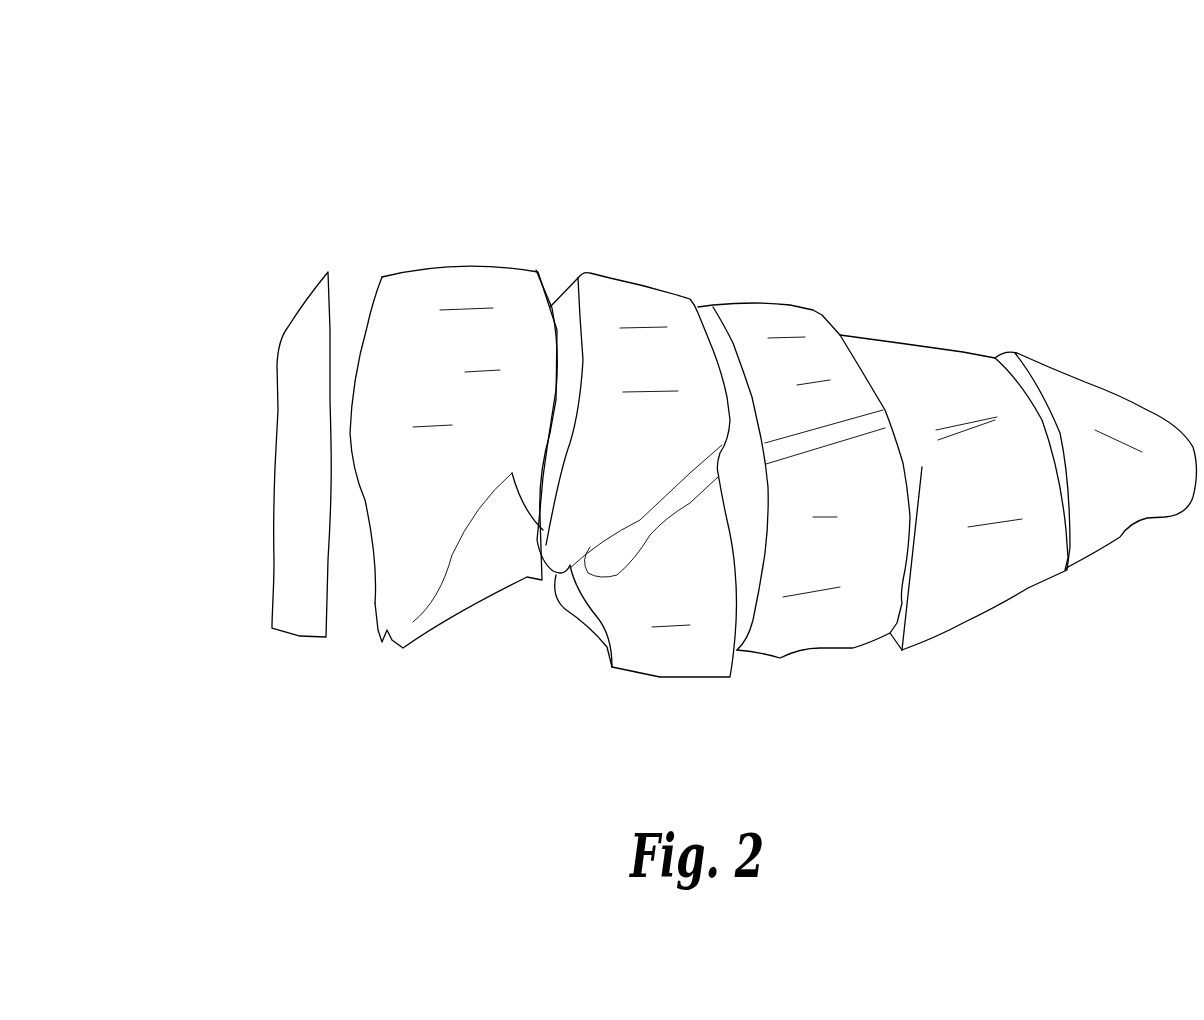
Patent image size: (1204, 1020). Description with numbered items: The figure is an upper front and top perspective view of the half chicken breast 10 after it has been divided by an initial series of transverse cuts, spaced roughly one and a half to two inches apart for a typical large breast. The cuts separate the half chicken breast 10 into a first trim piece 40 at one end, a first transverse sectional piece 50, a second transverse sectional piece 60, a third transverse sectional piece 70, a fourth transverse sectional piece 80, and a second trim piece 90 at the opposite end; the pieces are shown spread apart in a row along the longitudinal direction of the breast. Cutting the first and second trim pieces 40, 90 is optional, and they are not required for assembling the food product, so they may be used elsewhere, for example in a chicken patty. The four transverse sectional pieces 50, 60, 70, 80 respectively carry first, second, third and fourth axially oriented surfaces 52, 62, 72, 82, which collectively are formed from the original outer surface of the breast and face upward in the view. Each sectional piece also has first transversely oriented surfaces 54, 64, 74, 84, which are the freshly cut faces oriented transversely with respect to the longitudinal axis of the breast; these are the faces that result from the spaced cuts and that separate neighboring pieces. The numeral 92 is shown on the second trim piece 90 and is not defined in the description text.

The half chicken breast 10 is at (330, 130).
The first trim piece 40 is at (285, 267).
The first transverse sectional piece 50 is at (424, 409).
The first axially oriented surface 52 is at (424, 354).
The first transversely oriented surface 54 is at (373, 300).
The second transverse sectional piece 60 is at (614, 431).
The second axially oriented surface 62 is at (626, 368).
The first transversely oriented surface 64 is at (575, 310).
The third transverse sectional piece 70 is at (776, 481).
The third axially oriented surface 72 is at (775, 372).
The first transversely oriented surface 74 is at (753, 550).
The fourth transverse sectional piece 80 is at (955, 484).
The fourth axially oriented surface 82 is at (950, 401).
The first transversely oriented surface 84 is at (858, 357).
The second trim piece 90 is at (1096, 428).
The fifth segment outer surface 92 is at (1096, 490).